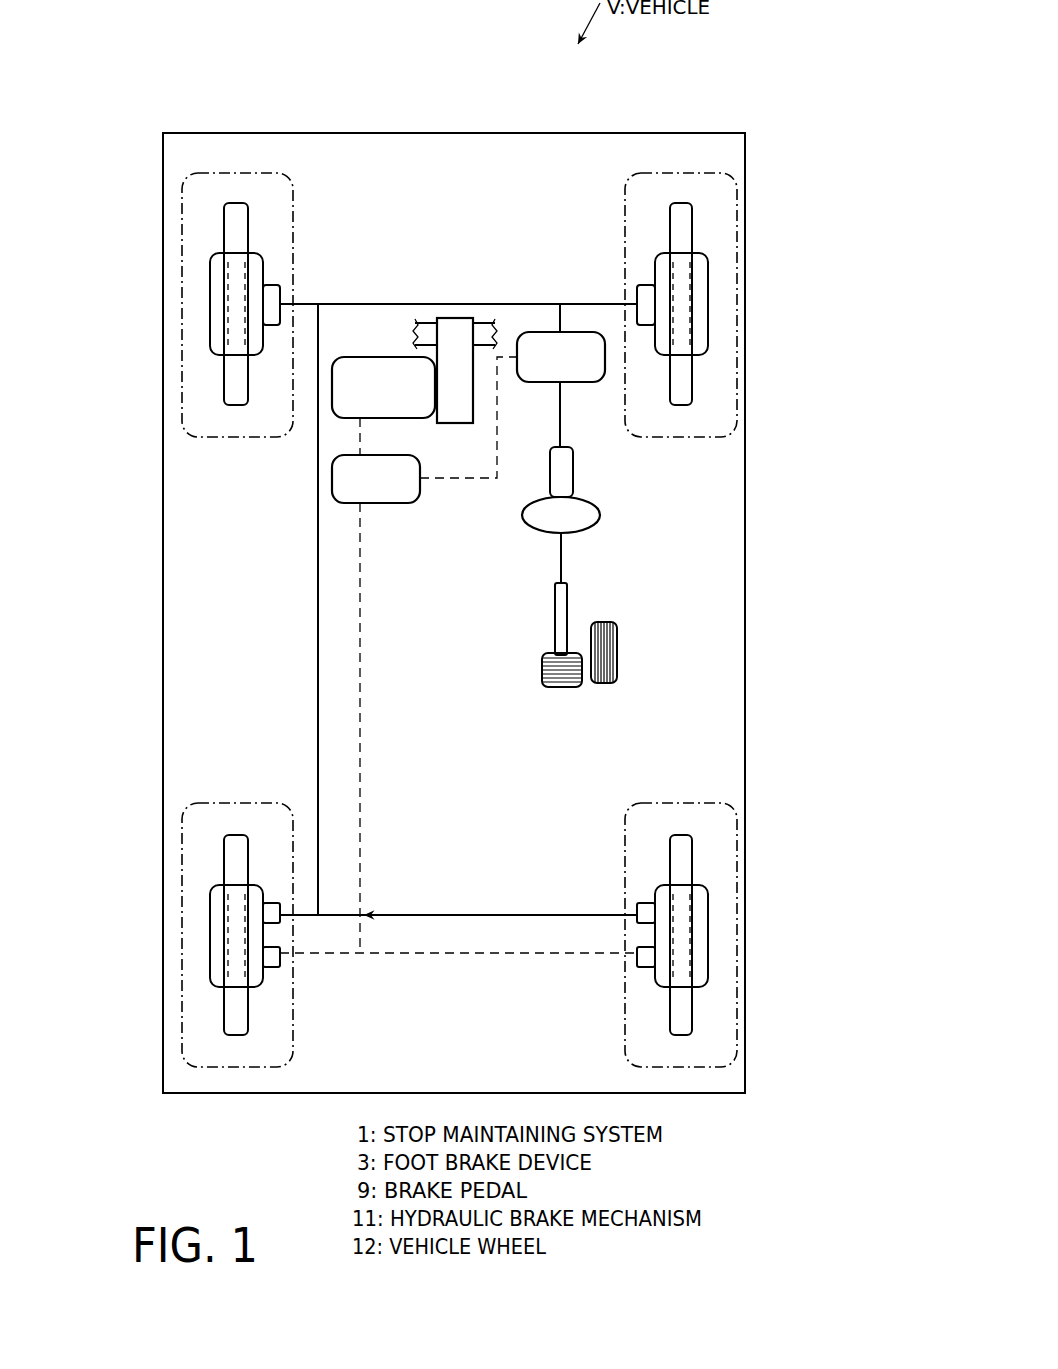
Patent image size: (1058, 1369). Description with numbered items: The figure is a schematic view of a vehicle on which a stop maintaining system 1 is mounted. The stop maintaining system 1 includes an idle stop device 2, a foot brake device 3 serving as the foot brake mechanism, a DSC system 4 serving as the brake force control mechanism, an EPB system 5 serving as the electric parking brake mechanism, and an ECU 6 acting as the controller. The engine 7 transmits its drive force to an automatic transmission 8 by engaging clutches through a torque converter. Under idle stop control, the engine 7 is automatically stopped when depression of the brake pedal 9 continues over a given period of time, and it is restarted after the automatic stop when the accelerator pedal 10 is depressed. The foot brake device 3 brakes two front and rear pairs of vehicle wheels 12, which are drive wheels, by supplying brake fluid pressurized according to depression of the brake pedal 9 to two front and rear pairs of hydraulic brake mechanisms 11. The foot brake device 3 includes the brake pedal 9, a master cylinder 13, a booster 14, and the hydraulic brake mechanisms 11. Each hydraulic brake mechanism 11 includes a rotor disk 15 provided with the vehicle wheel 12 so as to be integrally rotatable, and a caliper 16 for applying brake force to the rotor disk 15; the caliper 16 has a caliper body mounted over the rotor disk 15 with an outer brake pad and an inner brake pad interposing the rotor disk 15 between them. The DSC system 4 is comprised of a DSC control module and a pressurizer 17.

The stop maintaining system 1 is at (585, 104).
The idle stop device 2 is at (310, 454).
The foot brake device 3 is at (608, 520).
The DSC system 4 is at (530, 326).
The EPB system 5 is at (346, 1000).
The ECU 6 is at (401, 505).
The engine 7 is at (362, 357).
The automatic transmission 8 is at (455, 423).
The brake pedal 9 is at (566, 688).
The accelerator pedal 10 is at (618, 653).
The hydraulic brake mechanism 11 is at (274, 254).
The vehicle wheel 12 is at (233, 172).
The master cylinder 13 is at (574, 472).
The booster 14 is at (584, 534).
The rotor disk 15 is at (238, 218).
The caliper 16 is at (215, 304).
The pressurizer 17 is at (585, 383).